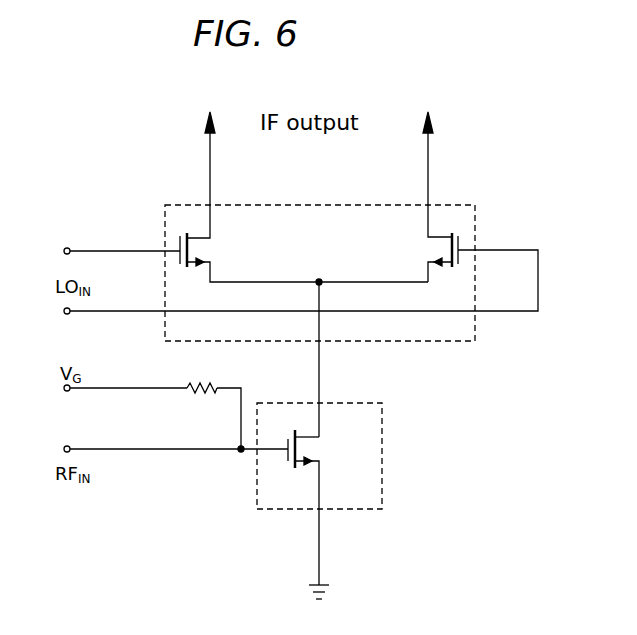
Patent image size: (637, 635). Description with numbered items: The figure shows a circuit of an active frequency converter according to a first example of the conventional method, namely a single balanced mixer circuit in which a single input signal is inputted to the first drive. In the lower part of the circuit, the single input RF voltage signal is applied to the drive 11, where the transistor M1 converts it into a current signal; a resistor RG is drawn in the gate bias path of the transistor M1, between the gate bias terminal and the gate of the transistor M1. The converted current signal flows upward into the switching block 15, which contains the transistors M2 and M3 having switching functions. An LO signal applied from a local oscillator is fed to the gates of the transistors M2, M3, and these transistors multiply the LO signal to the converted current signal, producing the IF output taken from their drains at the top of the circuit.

The drive 11 is at (352, 494).
The switching (LO mixing) stage with transistors M2 and M3 15 is at (352, 230).
The transistor M1 is at (320, 507).
The transistor M2 is at (304, 197).
The transistor M3 is at (425, 197).
The gate bias resistor RG is at (202, 377).